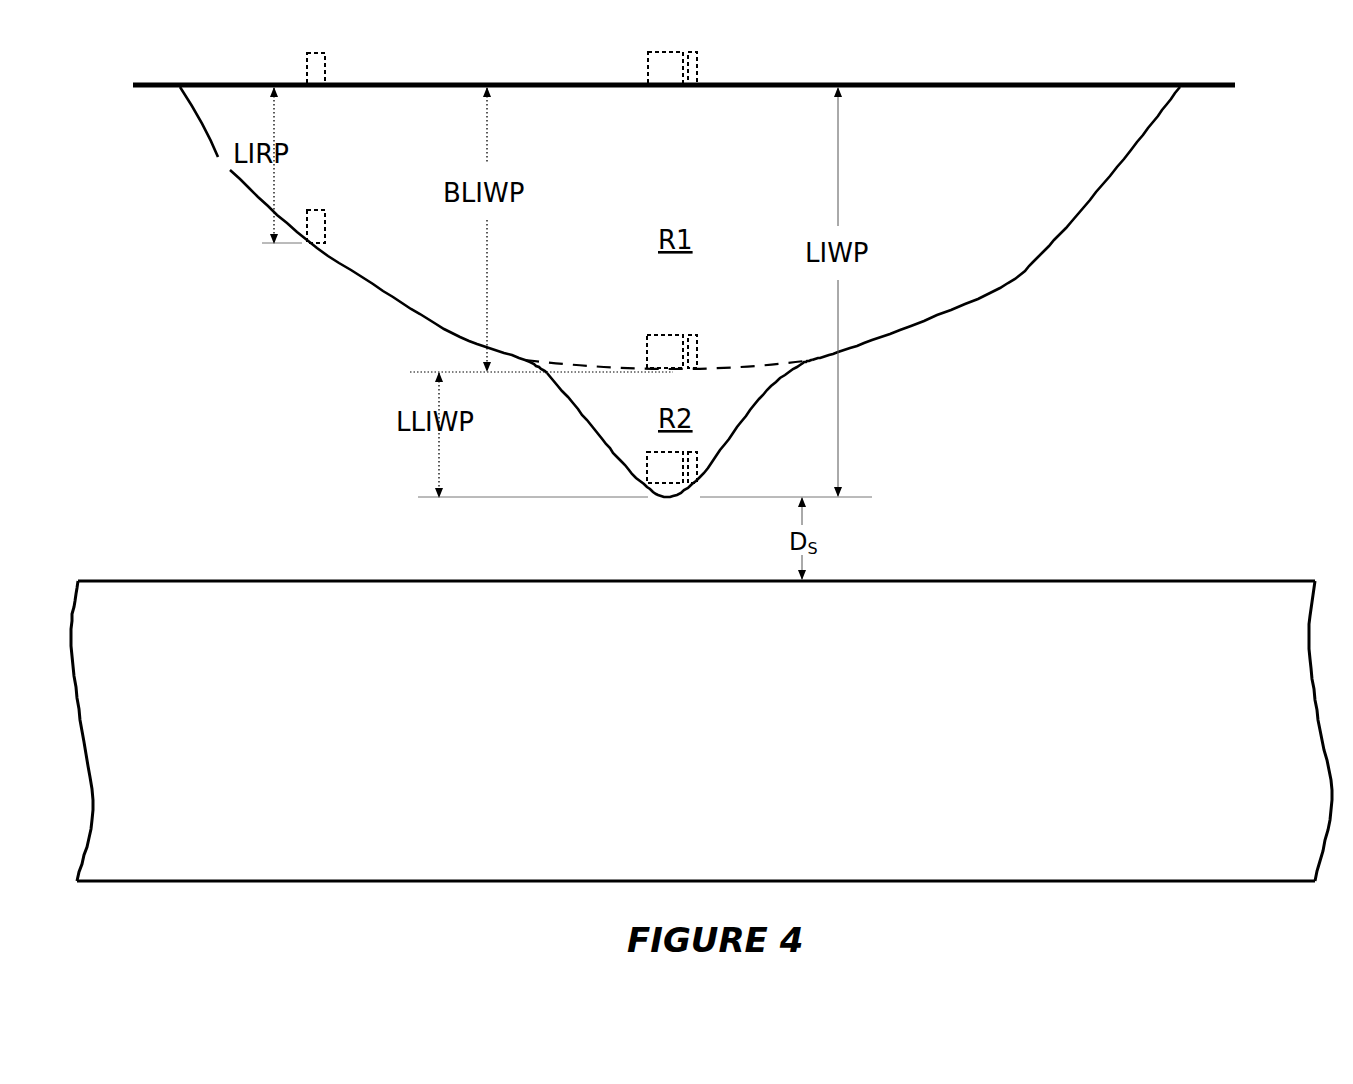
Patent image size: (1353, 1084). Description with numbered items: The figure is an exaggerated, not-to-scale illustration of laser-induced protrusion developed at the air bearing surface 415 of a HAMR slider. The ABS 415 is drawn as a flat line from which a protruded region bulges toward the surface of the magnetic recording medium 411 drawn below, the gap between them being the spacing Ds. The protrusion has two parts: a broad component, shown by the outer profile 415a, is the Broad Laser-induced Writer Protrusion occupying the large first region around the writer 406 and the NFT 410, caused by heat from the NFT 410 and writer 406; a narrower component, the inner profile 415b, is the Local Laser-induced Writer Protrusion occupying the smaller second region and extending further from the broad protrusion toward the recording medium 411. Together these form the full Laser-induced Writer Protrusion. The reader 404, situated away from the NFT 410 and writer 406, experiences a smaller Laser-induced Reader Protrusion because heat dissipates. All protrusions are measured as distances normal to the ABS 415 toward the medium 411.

The reader 404 is at (326, 60).
The writer 406 is at (647, 64).
The NFT 410 is at (699, 64).
The magnetic recording medium 411 is at (1192, 580).
The air bearing surface (ABS) 415 is at (1212, 87).
The upper protrusion profile (region R1) 415a is at (1043, 252).
The lower protrusion profile (region R2) 415b is at (748, 428).